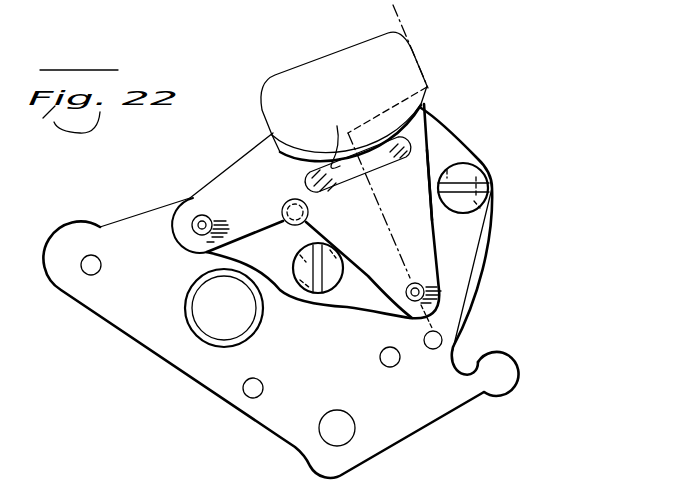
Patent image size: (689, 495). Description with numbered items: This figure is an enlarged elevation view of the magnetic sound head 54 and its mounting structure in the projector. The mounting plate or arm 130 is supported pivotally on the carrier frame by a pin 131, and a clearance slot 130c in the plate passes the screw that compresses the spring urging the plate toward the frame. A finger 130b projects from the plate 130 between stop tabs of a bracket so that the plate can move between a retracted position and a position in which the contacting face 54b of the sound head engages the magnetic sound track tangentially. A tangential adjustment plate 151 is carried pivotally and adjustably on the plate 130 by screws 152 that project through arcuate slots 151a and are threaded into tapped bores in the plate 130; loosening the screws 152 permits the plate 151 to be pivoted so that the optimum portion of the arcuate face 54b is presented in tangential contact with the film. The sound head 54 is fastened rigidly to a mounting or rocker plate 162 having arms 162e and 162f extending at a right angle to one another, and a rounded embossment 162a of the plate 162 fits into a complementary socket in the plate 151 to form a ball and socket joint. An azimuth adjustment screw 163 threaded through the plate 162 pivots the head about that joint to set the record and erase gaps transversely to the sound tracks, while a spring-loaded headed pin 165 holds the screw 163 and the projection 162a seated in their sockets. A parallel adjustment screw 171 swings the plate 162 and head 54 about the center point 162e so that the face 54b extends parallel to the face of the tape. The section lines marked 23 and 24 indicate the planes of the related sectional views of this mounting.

The section line 24- 24 is at (404, 13).
The section line 23- 23 is at (487, 122).
The magnetic sound head 54 is at (366, 85).
The contacting face 54b is at (321, 135).
The mounting or rocker plate 162 is at (413, 257).
The arm 162e is at (240, 158).
The arm 162f is at (436, 238).
The rounded embossment 162a is at (381, 163).
The azimuth adjustment screw 163 is at (212, 221).
The headed pin 165 is at (310, 213).
The parallel adjustment screw 171 is at (425, 292).
The tangential adjustment plate 151 is at (478, 157).
The arcuate slots 151a is at (472, 180).
The screws 152 is at (489, 197).
The mounting plate or arm 130 is at (210, 376).
The finger 130b is at (530, 456).
The clearance slot 130c is at (198, 323).
The pin 131 is at (91, 272).